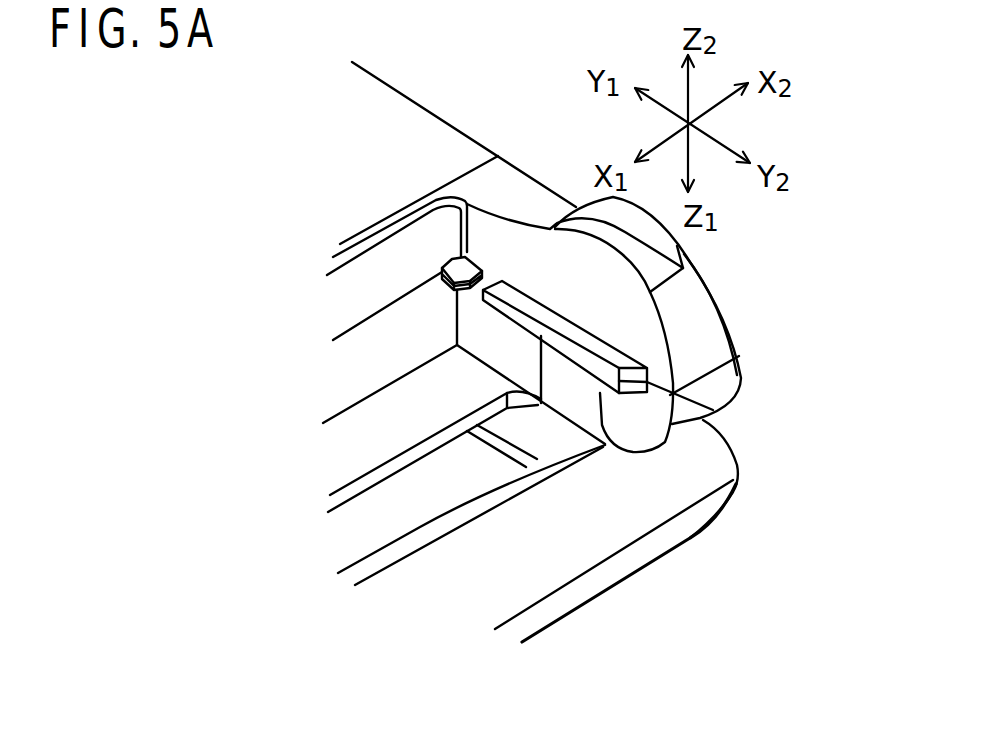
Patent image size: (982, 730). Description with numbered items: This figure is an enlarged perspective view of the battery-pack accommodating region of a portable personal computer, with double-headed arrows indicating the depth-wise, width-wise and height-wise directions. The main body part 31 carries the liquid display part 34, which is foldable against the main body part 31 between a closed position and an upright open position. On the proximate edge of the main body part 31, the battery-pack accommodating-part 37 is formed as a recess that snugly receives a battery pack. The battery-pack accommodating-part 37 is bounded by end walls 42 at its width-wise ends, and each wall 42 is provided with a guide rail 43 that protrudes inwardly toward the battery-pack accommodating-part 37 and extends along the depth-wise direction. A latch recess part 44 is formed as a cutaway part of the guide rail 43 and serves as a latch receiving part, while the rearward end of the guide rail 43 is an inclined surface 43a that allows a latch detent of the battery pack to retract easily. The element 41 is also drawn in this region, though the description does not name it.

The main body part 31 is at (387, 105).
The liquid display part 34 is at (735, 493).
The battery-pack accommodating-part 37 is at (352, 426).
The curved holder 41 is at (713, 302).
The end wall 42 is at (655, 412).
The guide rail 43 is at (601, 393).
The inclined surface 43a is at (713, 410).
The latch recess part 44 is at (466, 291).